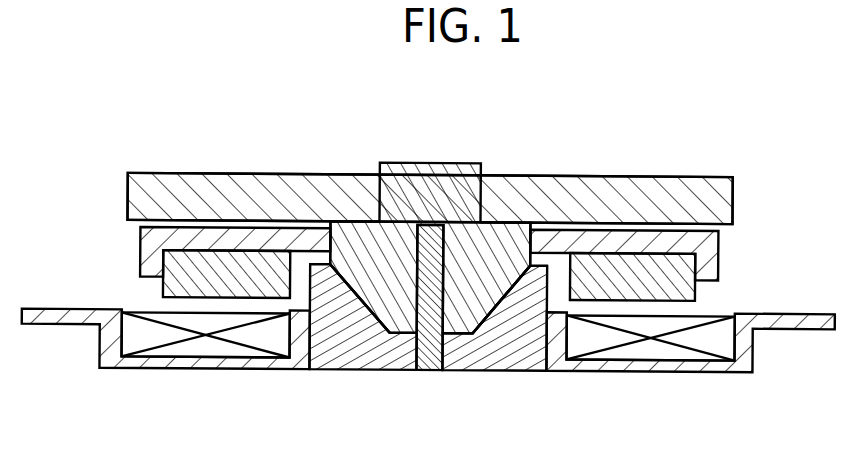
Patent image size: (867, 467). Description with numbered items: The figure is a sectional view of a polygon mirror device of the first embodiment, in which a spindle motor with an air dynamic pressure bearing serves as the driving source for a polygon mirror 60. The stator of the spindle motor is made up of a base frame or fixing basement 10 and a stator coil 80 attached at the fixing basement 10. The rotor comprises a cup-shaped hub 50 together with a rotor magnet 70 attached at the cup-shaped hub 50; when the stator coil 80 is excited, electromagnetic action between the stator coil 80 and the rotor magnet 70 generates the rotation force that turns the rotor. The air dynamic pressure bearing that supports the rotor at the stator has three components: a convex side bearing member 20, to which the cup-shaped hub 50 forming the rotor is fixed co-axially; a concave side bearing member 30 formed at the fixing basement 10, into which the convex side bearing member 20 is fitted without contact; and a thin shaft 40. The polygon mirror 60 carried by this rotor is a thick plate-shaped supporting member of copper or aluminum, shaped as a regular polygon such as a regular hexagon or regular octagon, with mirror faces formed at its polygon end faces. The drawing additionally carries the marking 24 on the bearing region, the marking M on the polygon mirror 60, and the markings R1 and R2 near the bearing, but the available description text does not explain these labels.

The fixing basement 10 is at (155, 363).
The convex side bearing member 20 is at (423, 172).
The tapered portion 24 is at (443, 283).
The concave side bearing member 30 is at (342, 357).
The thin shaft 40 is at (428, 372).
The cup-shaped hub 50 is at (714, 241).
The polygon mirror 60 is at (633, 193).
The rotor magnet 70 is at (688, 297).
The stator coil 80 is at (665, 350).
The magnet M is at (127, 182).
The radius of curvature R1 is at (504, 305).
The radius of curvature R2 is at (417, 290).